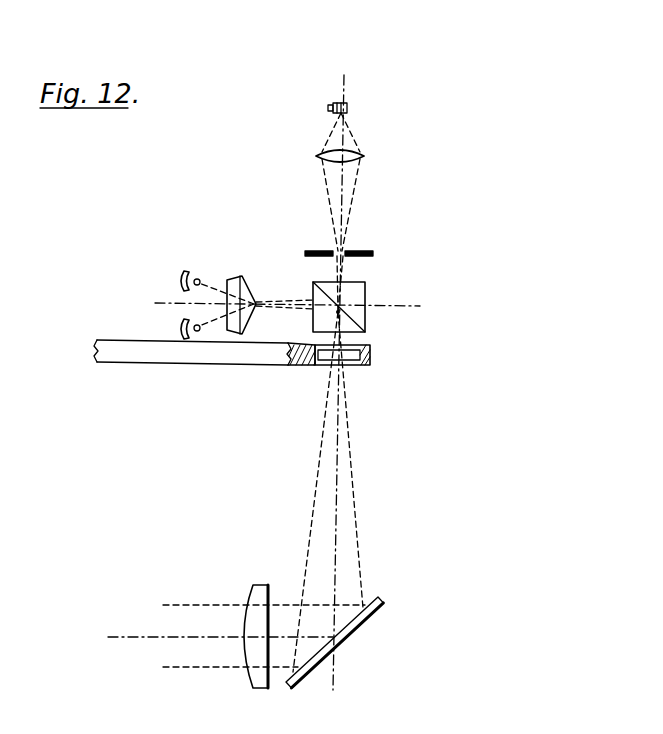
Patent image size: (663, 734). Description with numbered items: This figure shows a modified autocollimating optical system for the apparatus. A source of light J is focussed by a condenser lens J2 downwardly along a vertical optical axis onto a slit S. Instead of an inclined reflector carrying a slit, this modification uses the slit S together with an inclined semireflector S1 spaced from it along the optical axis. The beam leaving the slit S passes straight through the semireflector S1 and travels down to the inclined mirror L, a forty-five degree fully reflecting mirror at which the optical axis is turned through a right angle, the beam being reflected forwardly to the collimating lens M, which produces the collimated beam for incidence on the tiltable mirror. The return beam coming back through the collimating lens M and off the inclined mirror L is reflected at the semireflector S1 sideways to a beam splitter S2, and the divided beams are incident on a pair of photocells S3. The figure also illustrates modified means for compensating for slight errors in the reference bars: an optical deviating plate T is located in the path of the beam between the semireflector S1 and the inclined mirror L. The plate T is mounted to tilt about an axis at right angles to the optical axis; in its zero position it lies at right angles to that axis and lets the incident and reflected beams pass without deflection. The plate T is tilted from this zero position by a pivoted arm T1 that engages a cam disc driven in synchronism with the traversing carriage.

The source of light J is at (347, 108).
The condenser lens J2 is at (364, 153).
The slit S is at (346, 250).
The inclined semireflector S1 is at (352, 318).
The beam splitter S2 is at (247, 285).
The photocells S3 is at (182, 328).
The optical deviating plate T is at (367, 348).
The pivoted arm T1 is at (243, 360).
The collimating lens M is at (253, 600).
The fully reflecting mirror L is at (347, 628).